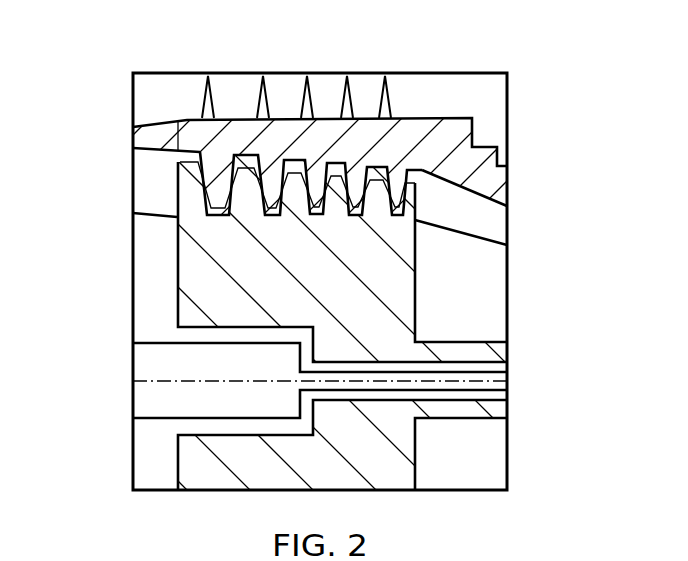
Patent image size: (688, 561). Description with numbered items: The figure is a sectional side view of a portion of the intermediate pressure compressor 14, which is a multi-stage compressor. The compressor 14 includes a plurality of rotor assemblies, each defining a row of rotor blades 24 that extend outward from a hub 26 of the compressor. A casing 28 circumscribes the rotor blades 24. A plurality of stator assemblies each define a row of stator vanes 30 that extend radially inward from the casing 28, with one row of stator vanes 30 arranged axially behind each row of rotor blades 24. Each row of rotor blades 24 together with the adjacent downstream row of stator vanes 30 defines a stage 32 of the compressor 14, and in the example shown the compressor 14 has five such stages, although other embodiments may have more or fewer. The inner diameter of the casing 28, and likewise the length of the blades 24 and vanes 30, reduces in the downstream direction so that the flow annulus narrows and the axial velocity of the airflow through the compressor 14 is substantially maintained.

The intermediate pressure compressor 14 is at (524, 57).
The rotor blades 24 is at (192, 202).
The hub 26 is at (202, 275).
The casing 28 is at (160, 125).
The stator vanes 30 is at (220, 186).
The stage 32 is at (385, 118).